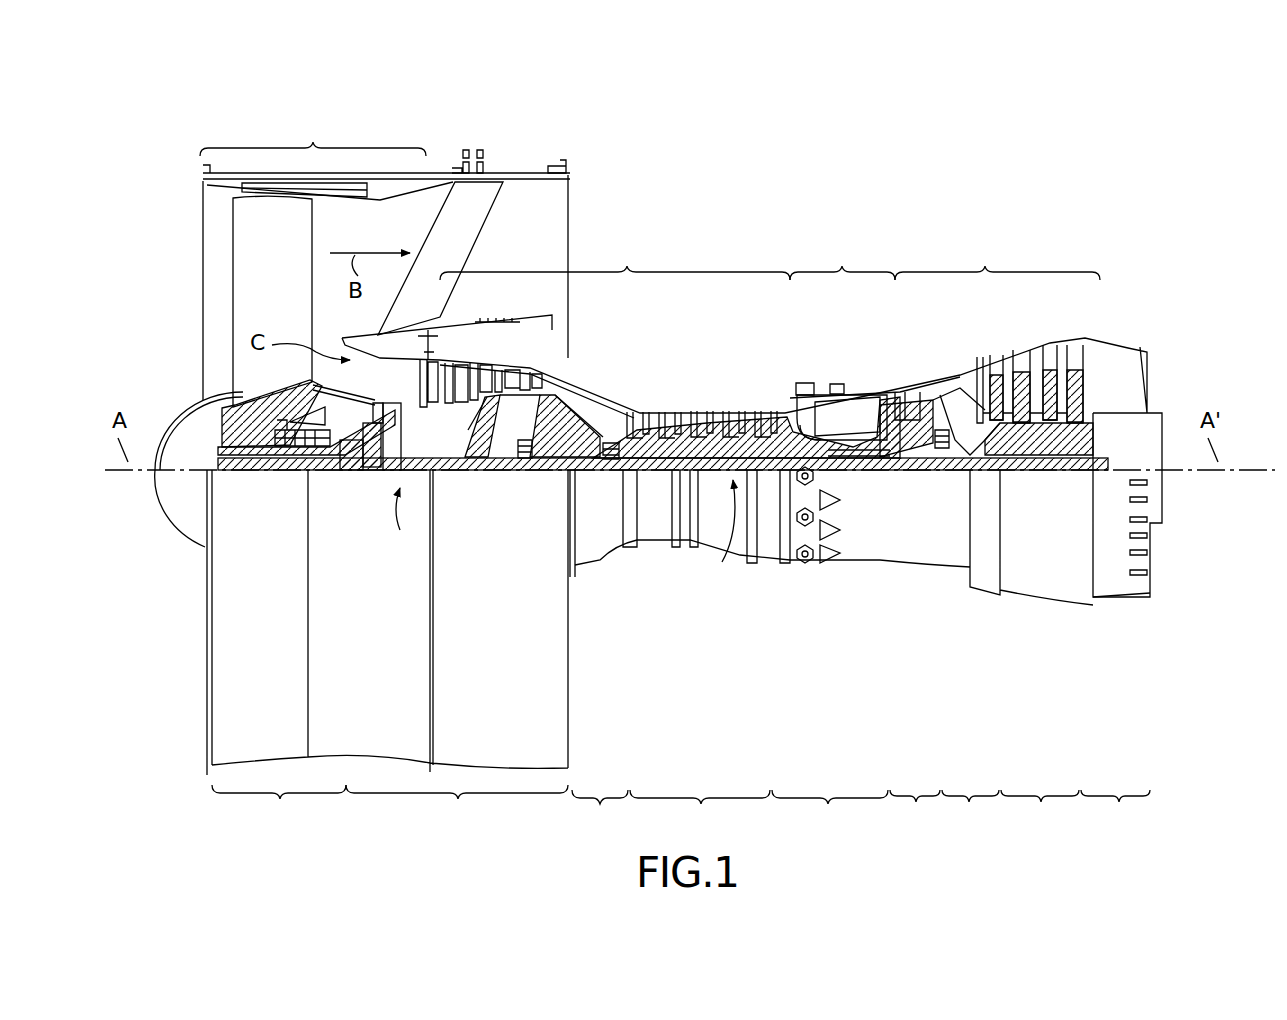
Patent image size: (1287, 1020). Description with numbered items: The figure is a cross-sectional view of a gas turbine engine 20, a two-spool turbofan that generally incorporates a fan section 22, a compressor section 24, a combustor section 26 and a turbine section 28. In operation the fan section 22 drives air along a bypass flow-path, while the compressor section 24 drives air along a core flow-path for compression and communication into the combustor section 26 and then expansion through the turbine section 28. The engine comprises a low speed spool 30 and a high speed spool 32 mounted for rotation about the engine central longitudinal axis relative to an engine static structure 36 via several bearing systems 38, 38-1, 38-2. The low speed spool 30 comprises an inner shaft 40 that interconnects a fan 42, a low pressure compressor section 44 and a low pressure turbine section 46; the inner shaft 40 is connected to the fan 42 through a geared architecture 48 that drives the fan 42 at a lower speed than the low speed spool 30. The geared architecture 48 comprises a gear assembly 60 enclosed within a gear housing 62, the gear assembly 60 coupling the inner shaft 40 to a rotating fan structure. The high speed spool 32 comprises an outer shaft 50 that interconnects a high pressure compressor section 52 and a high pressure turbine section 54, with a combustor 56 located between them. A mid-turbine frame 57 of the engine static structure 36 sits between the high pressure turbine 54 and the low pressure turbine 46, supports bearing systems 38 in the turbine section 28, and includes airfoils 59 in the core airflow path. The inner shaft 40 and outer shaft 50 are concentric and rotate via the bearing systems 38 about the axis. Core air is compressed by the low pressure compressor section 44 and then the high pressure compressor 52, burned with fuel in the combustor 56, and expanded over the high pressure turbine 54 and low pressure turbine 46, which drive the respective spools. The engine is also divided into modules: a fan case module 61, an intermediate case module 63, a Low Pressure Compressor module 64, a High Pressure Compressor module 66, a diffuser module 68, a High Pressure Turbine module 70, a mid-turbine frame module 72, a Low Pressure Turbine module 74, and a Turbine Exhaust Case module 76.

The gas turbine engine 20 is at (886, 208).
The fan section 22 is at (313, 135).
The compressor section 24 is at (615, 259).
The combustor section 26 is at (842, 259).
The turbine section 28 is at (997, 259).
The low speed spool 30 is at (720, 536).
The high speed spool 32 is at (765, 440).
The engine static structure 36 is at (192, 782).
The bearing system 38 is at (950, 445).
The bearing system 38-1 is at (286, 455).
The bearing system 38-2 is at (520, 460).
The inner shaft 40 is at (590, 472).
The fan 42 is at (282, 295).
The low pressure compressor section 44 is at (516, 374).
The low pressure turbine section 46 is at (1033, 362).
The geared architecture 48 is at (402, 524).
The outer shaft 50 is at (835, 455).
The high pressure compressor section 52 is at (705, 440).
The high pressure turbine section 54 is at (907, 392).
The combustor 56 is at (838, 415).
The mid-turbine frame 57 is at (948, 418).
The airfoils 59 is at (965, 395).
The gear assembly 60 is at (400, 455).
The fan case module 61 is at (279, 811).
The gear housing 62 is at (400, 424).
The intermediate case module 63 is at (457, 811).
The Low Pressure Compressor (LPC) module 64 is at (600, 814).
The High Pressure Compressor (HPC) module 66 is at (700, 814).
The diffuser module 68 is at (830, 814).
The High Pressure Turbine (HPT) module 70 is at (915, 813).
The mid-turbine frame (MTF) module 72 is at (970, 813).
The Low Pressure Turbine (LPT) module 74 is at (1040, 813).
The Turbine Exhaust Case (TEC) module 76 is at (1115, 813).